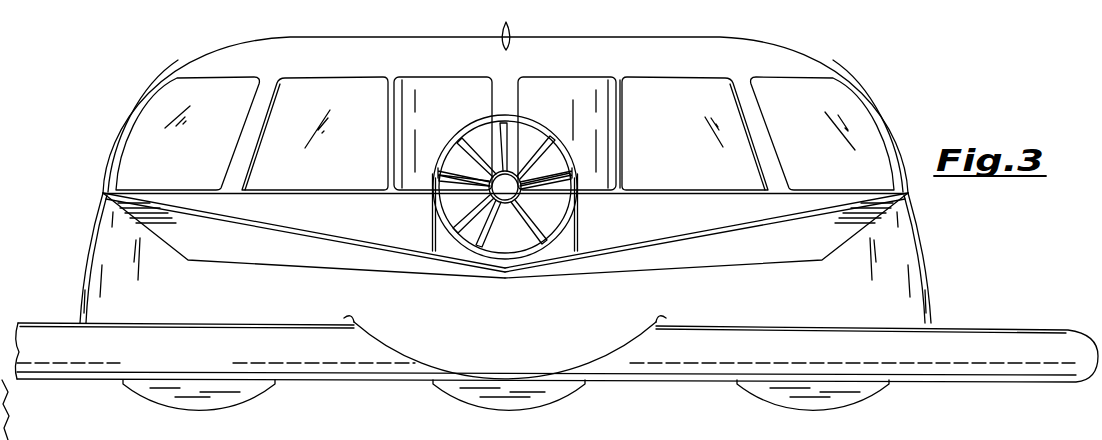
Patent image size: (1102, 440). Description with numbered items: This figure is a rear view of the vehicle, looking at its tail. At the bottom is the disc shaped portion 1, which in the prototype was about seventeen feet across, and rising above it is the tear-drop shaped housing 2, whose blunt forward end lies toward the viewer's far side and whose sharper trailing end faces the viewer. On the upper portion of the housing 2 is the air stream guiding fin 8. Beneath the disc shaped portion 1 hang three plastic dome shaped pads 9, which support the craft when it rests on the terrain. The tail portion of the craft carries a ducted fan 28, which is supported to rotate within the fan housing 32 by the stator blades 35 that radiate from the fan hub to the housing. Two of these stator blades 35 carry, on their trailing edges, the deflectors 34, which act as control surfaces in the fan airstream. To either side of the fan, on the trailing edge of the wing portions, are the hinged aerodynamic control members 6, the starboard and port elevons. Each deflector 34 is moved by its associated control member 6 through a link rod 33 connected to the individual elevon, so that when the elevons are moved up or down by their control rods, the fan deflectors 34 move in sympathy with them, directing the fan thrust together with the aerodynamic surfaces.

The disc shaped portion 1 is at (967, 329).
The housing 2 is at (655, 39).
The aerodynamic control members 6 is at (255, 254).
The air stream guiding fin 8 is at (511, 36).
The dome shaped pads 9 is at (556, 392).
The ducted fan 28 is at (473, 145).
The fan housing 32 is at (561, 149).
The link rods 33 is at (431, 234).
The deflectors 34 is at (436, 186).
The stator blades 35 is at (432, 173).